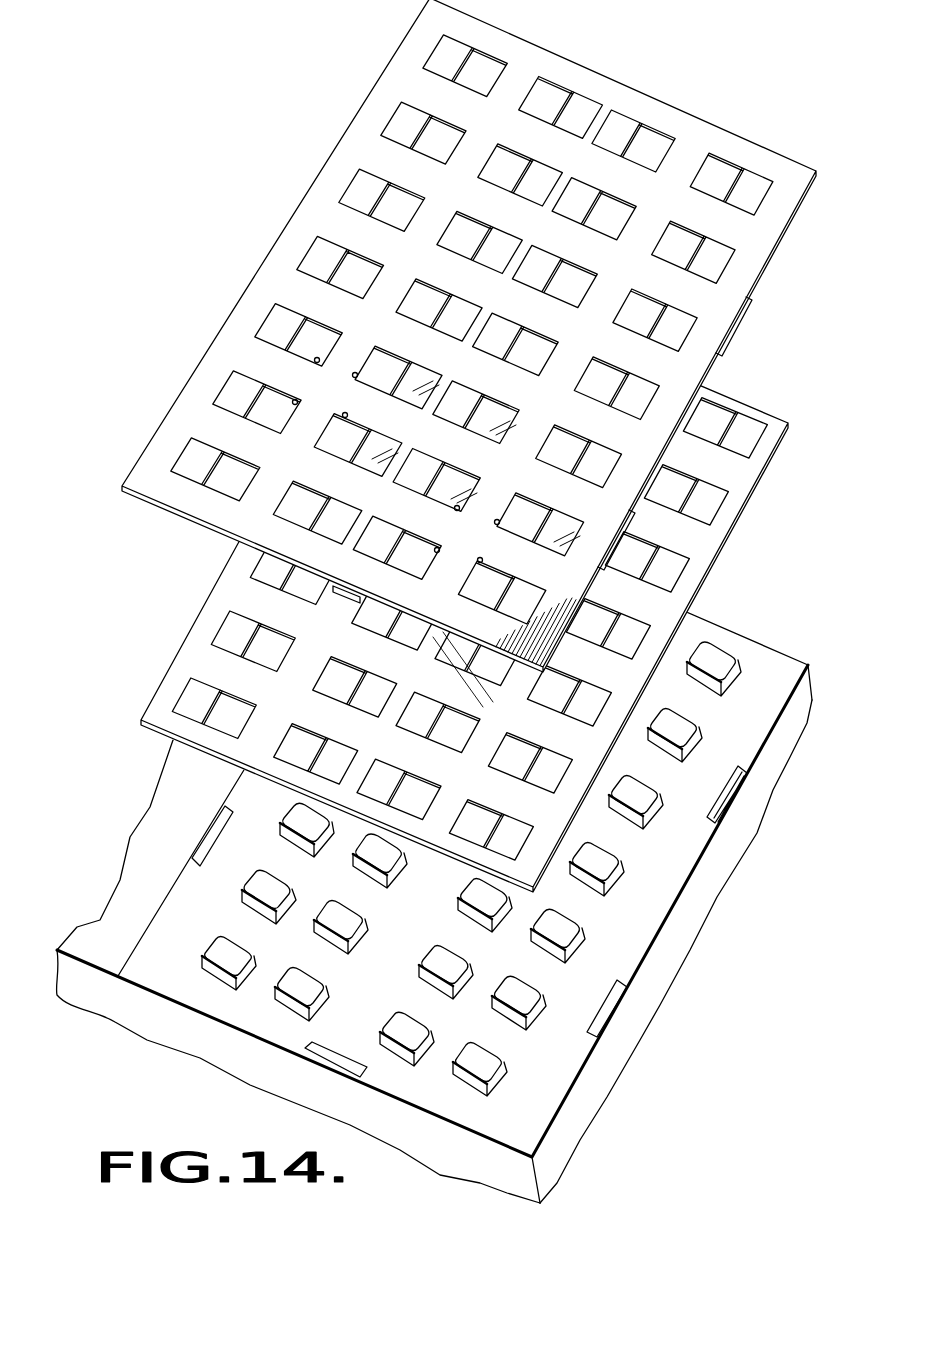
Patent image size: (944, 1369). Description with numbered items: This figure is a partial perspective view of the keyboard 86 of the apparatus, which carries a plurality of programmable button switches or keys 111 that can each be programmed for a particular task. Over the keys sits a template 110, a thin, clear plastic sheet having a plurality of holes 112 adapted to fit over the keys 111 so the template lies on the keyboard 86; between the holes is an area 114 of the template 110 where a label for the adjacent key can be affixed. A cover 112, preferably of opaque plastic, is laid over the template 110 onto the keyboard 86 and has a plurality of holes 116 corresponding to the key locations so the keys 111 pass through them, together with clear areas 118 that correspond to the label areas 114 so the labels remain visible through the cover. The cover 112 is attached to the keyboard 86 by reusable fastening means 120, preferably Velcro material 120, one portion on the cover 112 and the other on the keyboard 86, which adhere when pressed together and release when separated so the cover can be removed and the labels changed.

The keyboard 86 is at (168, 915).
The template 110 is at (165, 690).
The projections 111 is at (295, 723).
The cover 112 is at (163, 433).
The label area 114 is at (413, 656).
The holes 116 is at (345, 413).
The clear areas 118 is at (418, 416).
The reusable fastening means 120 is at (723, 348).